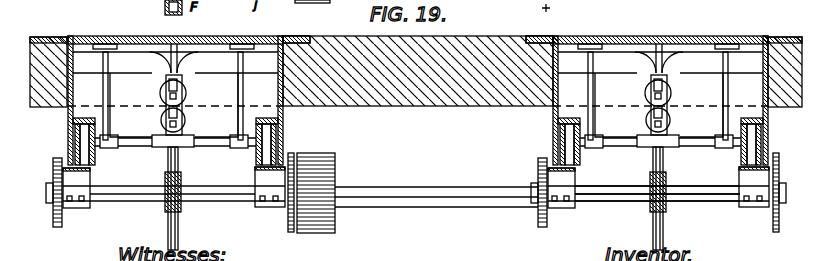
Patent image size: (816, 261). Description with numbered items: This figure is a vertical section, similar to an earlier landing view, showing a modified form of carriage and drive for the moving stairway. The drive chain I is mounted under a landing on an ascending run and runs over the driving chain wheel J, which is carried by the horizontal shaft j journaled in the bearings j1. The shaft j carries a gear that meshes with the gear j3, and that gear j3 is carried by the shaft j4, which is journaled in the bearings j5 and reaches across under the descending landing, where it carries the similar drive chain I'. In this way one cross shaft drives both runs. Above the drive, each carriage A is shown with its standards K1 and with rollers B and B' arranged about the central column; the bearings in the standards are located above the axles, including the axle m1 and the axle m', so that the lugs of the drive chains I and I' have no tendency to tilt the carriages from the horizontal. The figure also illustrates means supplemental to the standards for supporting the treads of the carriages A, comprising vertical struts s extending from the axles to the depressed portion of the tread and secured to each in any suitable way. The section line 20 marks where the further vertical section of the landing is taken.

The carriage A is at (418, 32).
The upper roller B is at (411, 93).
The lower roller B' is at (413, 120).
The roller carrier column K1 is at (649, 93).
The vertical strut s is at (421, 89).
The bracket bar m' is at (175, 147).
The axle m1 is at (660, 148).
The drive chain I' is at (182, 198).
The drive chain I is at (663, 198).
The driving chain wheel J is at (666, 205).
The horizontal shaft j is at (602, 197).
The bearing j1 is at (185, 168).
The gear j3 is at (338, 167).
The shaft j4 is at (412, 188).
The bearing j5 is at (76, 206).
The section line 20 is at (552, 13).